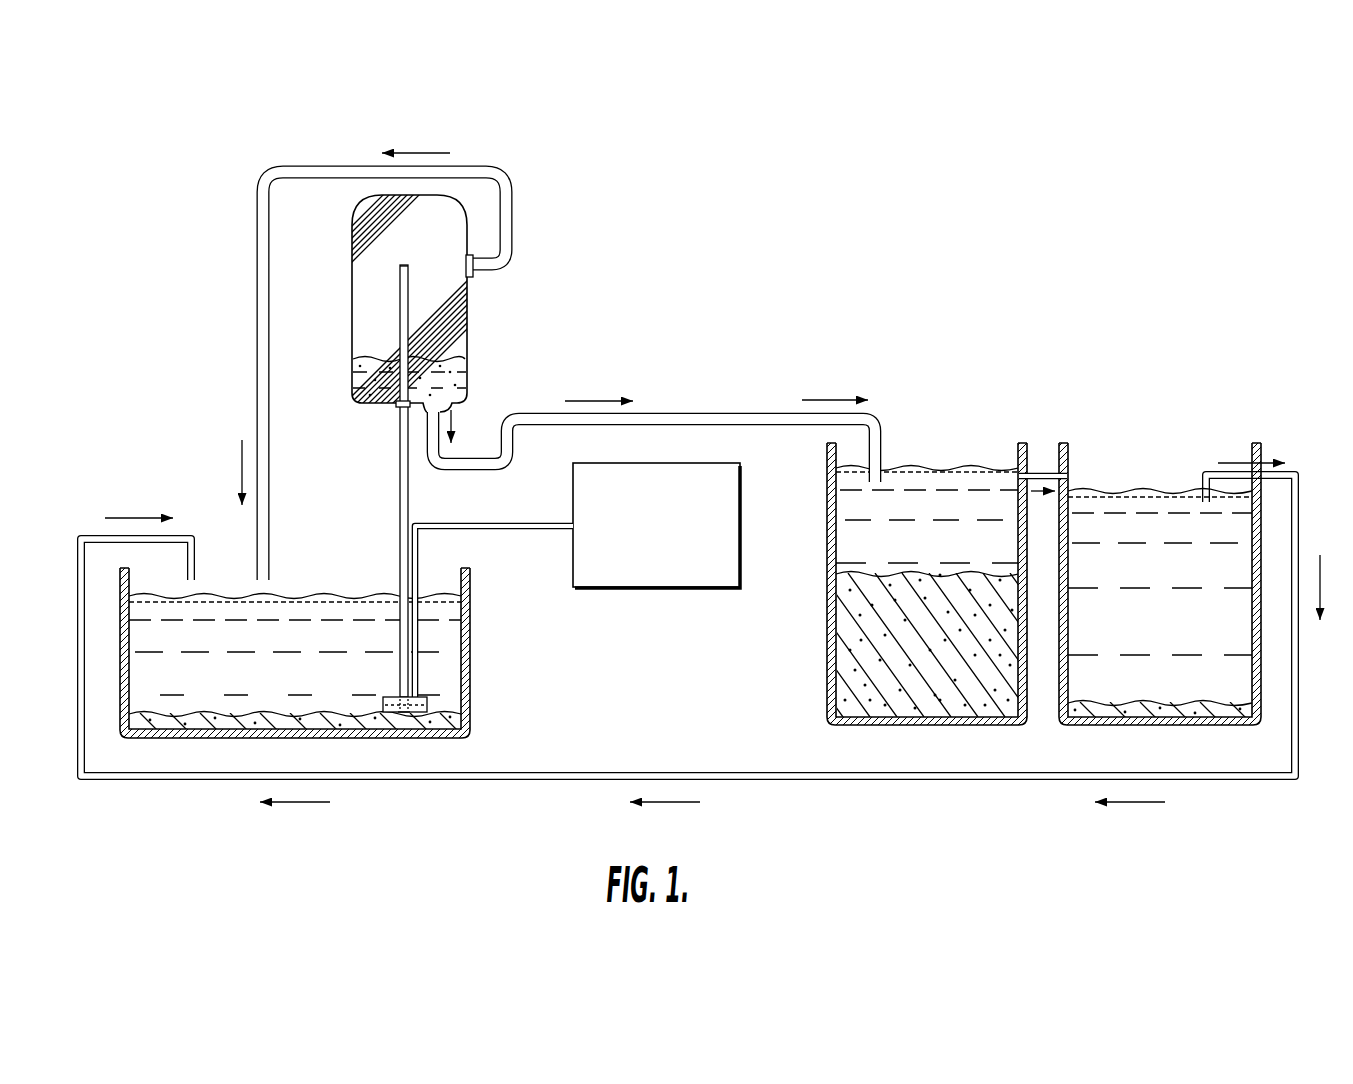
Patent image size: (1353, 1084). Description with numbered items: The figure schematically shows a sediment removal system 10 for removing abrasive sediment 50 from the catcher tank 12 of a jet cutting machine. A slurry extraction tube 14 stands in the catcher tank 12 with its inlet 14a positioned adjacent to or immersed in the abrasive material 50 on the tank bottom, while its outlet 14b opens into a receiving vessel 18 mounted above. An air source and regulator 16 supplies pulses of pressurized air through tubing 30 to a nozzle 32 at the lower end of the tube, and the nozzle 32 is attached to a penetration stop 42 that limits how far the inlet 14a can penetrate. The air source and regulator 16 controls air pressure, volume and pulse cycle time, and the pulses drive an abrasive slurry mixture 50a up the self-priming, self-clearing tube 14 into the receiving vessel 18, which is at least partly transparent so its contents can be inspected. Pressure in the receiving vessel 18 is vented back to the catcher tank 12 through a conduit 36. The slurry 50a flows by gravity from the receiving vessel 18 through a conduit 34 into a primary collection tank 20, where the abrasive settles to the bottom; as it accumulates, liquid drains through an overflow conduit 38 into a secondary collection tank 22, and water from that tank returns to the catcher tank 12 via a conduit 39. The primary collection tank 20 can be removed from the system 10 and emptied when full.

The sediment removal system 10 is at (1022, 260).
The catcher tank 12 is at (468, 628).
The slurry extraction tube 14 is at (414, 518).
The inlet 14a is at (406, 715).
The outlet 14b is at (406, 272).
The air source and regulator 16 is at (699, 588).
The receiving vessel 18 is at (387, 300).
The primary collection tank 20 is at (827, 658).
The secondary collection tank 22 is at (1263, 630).
The tubing 30 is at (490, 529).
The nozzle 32 is at (418, 697).
The conduit 34 is at (783, 412).
The conduit 36 is at (513, 196).
The overflow conduit 38 is at (1040, 473).
The conduit 39 is at (1298, 484).
The penetration stop 42 is at (385, 698).
The sediment 50 is at (140, 717).
The abrasive slurry mixture 50a is at (447, 368).